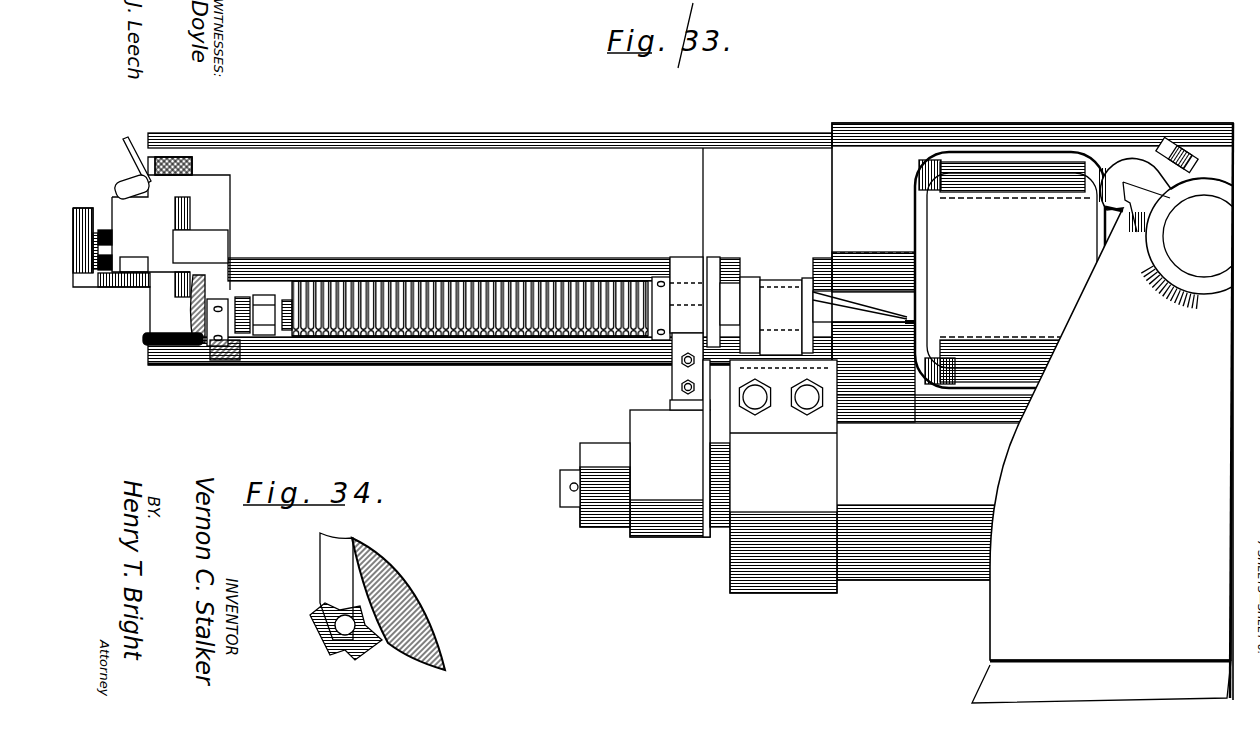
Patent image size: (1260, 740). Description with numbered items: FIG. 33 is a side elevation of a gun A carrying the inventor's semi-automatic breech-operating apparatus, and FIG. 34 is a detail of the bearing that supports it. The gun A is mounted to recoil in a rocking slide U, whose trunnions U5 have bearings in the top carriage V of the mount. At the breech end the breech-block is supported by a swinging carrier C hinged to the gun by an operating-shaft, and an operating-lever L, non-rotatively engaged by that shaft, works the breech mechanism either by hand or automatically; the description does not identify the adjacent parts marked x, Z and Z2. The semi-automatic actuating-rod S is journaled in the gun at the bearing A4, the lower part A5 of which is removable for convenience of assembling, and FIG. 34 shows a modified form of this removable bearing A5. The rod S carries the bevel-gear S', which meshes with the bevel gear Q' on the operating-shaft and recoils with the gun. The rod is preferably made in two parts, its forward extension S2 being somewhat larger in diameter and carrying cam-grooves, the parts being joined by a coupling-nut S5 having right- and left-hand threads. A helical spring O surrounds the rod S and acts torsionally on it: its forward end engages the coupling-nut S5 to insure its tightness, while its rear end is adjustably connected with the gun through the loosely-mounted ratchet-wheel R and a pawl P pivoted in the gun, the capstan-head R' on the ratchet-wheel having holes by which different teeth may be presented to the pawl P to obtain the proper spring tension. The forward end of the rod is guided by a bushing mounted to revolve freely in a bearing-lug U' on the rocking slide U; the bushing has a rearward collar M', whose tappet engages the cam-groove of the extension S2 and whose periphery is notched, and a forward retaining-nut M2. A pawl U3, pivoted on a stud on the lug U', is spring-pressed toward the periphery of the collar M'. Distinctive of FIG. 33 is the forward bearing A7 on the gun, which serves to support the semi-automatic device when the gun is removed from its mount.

In FIG. 33, the gun A is at (490, 335).
In FIG. 33, the helical spring O is at (494, 288).
In FIG. 33, the swinging carrier C is at (171, 227).
In FIG. 33, the slide block x is at (200, 246).
In FIG. 33, the operating-lever L is at (138, 275).
In FIG. 33, the lever Z is at (123, 143).
In FIG. 33, the lever pad Z2 is at (125, 183).
In FIG. 33, the bevel gear Q' is at (155, 349).
In FIG. 33, the removable bearing A5 is at (204, 340).
In FIG. 34, the removable bearing A5 is at (330, 643).
In FIG. 33, the bevel-gear S' is at (214, 345).
In FIG. 33, the semi-automatic actuating-rod S is at (263, 287).
In FIG. 33, the coupling-nut S5 is at (265, 337).
In FIG. 33, the forward bearing A7 is at (683, 262).
In FIG. 33, the pawl P is at (715, 266).
In FIG. 33, the rearward collar M' is at (750, 293).
In FIG. 33, the bearing-lug U' is at (781, 294).
In FIG. 33, the forward retaining-nut M2 is at (809, 284).
In FIG. 33, the forward extension S2 is at (896, 291).
In FIG. 33, the ratchet-wheel R is at (673, 373).
In FIG. 33, the capstan-head R' is at (645, 447).
In FIG. 33, the rocking slide U is at (1032, 411).
In FIG. 33, the pawl U3 is at (783, 474).
In FIG. 33, the trunnions U5 is at (1203, 236).
In FIG. 33, the top carriage V is at (1102, 420).
In FIG. 34, the bearing A4 is at (330, 559).